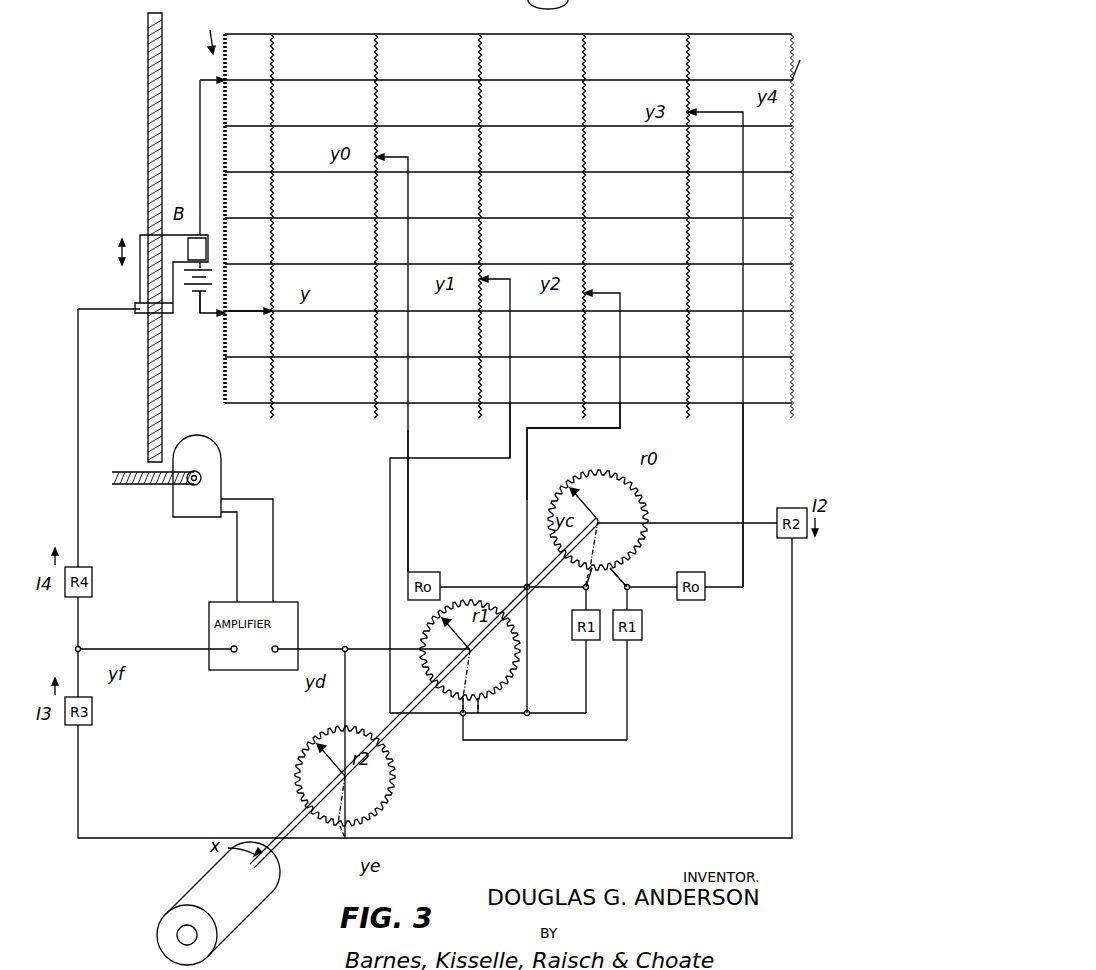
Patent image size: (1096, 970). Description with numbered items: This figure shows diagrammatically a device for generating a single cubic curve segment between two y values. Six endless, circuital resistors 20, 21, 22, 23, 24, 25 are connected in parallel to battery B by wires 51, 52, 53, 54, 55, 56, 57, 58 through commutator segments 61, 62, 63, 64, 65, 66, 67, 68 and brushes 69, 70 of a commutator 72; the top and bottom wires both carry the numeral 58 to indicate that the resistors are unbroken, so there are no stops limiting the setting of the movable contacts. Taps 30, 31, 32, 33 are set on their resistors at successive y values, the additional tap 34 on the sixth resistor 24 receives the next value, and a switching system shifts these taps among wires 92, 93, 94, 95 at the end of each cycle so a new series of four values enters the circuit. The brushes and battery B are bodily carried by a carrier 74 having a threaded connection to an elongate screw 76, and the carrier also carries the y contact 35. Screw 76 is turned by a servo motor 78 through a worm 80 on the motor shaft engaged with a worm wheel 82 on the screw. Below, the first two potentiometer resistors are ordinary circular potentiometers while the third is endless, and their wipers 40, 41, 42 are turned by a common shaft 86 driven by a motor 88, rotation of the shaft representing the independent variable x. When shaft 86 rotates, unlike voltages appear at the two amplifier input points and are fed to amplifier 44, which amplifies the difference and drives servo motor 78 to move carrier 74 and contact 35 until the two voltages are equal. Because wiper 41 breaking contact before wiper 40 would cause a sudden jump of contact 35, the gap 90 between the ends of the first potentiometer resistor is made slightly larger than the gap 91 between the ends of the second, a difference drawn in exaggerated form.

The resistance 20 is at (374, 68).
The resistance 21 is at (478, 68).
The resistance 22 is at (582, 66).
The resistance 23 is at (686, 66).
The sixth resistor 24 is at (790, 68).
The resistance 25 is at (274, 80).
The movable contact 30 is at (395, 156).
The movable contact 31 is at (490, 276).
The movable contact 32 is at (608, 296).
The movable contact 33 is at (724, 106).
The tap 34 is at (800, 60).
The y contact 35 is at (252, 310).
The wiper 40 is at (602, 545).
The wiper 41 is at (473, 646).
The wiper 42 is at (343, 782).
The amplifier 44 is at (210, 612).
The wire 51 is at (637, 359).
The wire 52 is at (637, 313).
The wire 53 is at (628, 266).
The wire 54 is at (620, 220).
The wire 55 is at (617, 174).
The wire 56 is at (617, 128).
The wire 57 is at (607, 83).
The wire 58 is at (716, 34).
The segment 61 is at (228, 356).
The segment 62 is at (228, 312).
The segment 63 is at (228, 264).
The segment 64 is at (228, 218).
The segment 65 is at (228, 172).
The segment 66 is at (228, 126).
The segment 67 is at (228, 80).
The segment 68 is at (232, 36).
The brush 69 is at (214, 318).
The brush 70 is at (218, 78).
The commutator 72 is at (206, 30).
The carrier 74 is at (138, 238).
The elongate screw 76 is at (148, 122).
The servo motor 78 is at (213, 453).
The worm 80 is at (201, 478).
The worm wheel 82 is at (126, 486).
The common shaft 86 is at (280, 848).
The motor 88 is at (232, 918).
The gap 90 is at (588, 586).
The gap 91 is at (477, 716).
The wire 92 is at (408, 456).
The wire 93 is at (506, 434).
The wire 94 is at (542, 430).
The wire 95 is at (743, 479).